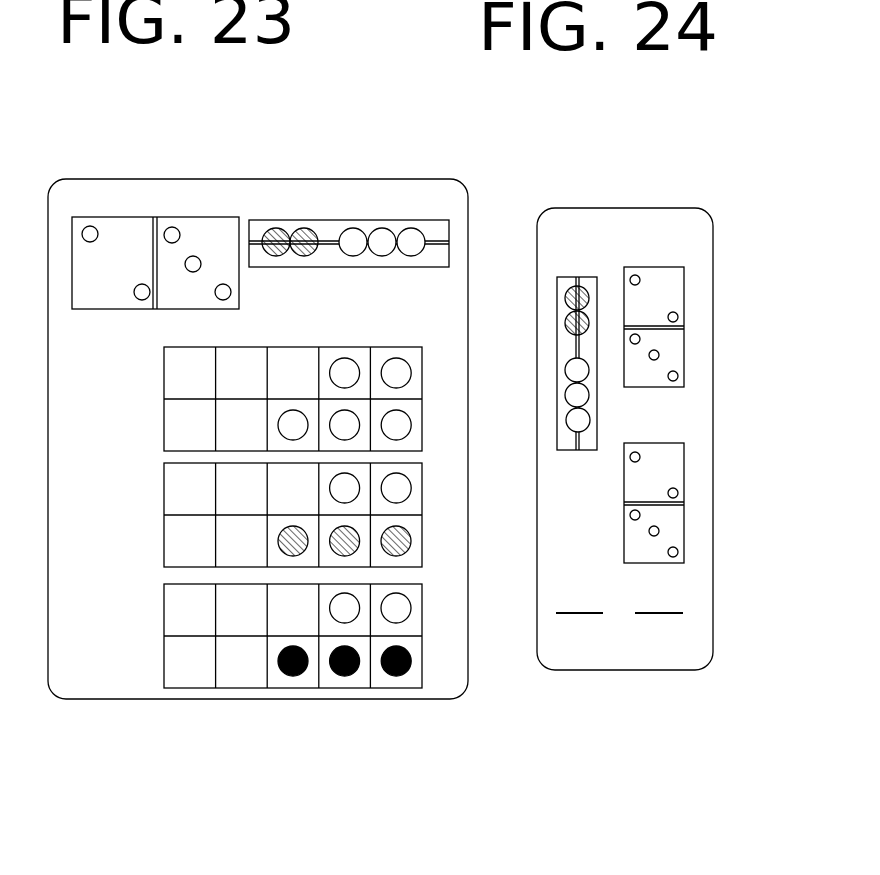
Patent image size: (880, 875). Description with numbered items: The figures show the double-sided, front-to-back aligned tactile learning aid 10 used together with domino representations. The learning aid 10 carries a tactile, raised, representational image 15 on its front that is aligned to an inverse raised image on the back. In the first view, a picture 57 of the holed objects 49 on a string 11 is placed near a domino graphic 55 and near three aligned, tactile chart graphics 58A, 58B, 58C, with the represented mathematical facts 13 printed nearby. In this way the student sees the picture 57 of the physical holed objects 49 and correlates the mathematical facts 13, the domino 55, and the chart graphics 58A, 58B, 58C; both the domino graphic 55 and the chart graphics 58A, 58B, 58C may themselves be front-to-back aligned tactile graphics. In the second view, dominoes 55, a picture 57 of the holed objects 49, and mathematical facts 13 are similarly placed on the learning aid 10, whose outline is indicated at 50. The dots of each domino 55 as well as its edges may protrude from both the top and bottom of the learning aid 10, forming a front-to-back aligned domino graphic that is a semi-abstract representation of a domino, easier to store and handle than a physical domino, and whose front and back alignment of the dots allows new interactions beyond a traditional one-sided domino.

In FIG. 23, the front-to-back aligned tactile learning aid 10 is at (262, 141).
In FIG. 24, the front-to-back aligned tactile learning aid 10 is at (616, 158).
In FIG. 23, the string 11 is at (338, 240).
In FIG. 23, the mathematical facts 13 is at (392, 290).
In FIG. 24, the mathematical facts 13 is at (692, 596).
In FIG. 23, the tactile, raised, representational image 15 is at (88, 230).
In FIG. 24, the tactile, raised, representational image 15 is at (637, 277).
In FIG. 23, the holed objects 49 is at (411, 244).
In FIG. 24, the holed objects 49 is at (575, 320).
In FIG. 23, the card body 50 is at (137, 699).
In FIG. 24, the card body 50 is at (577, 670).
In FIG. 23, the domino 55 is at (144, 217).
In FIG. 24, the domino 55 is at (684, 295).
In FIG. 23, the picture of the holed objects on a string 57 is at (292, 220).
In FIG. 24, the picture of the holed objects on a string 57 is at (557, 365).
In FIG. 23, the aligned tactile chart graphic 58A is at (164, 383).
In FIG. 23, the aligned tactile chart graphic 58B is at (164, 498).
In FIG. 23, the aligned tactile chart graphic 58C is at (164, 620).